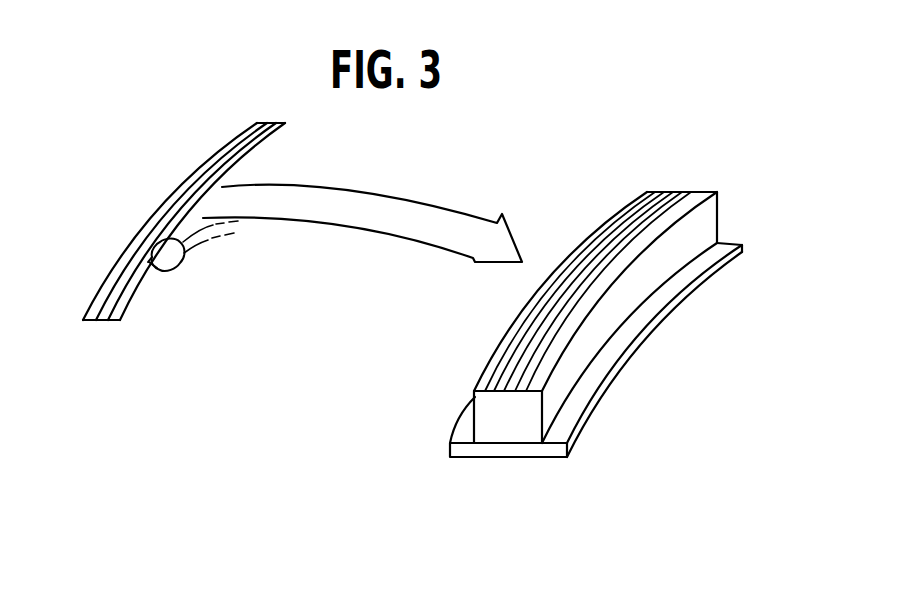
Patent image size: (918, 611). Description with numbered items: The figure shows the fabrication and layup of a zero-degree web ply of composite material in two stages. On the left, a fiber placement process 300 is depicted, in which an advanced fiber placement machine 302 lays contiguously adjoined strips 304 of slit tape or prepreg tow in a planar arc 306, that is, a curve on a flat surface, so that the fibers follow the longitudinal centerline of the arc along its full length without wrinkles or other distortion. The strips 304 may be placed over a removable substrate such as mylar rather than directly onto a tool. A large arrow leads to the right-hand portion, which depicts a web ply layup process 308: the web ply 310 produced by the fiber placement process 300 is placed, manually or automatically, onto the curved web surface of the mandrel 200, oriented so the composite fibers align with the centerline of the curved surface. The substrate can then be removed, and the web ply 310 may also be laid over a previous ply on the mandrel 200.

The mandrel 200 is at (607, 390).
The fiber placement process 300 is at (170, 256).
The advanced fiber placement (AFP) machine 302 is at (173, 258).
The strips 304 is at (93, 322).
The planar arc 306 is at (190, 182).
The web ply layup process 308 is at (623, 324).
The web ply 310 is at (590, 250).